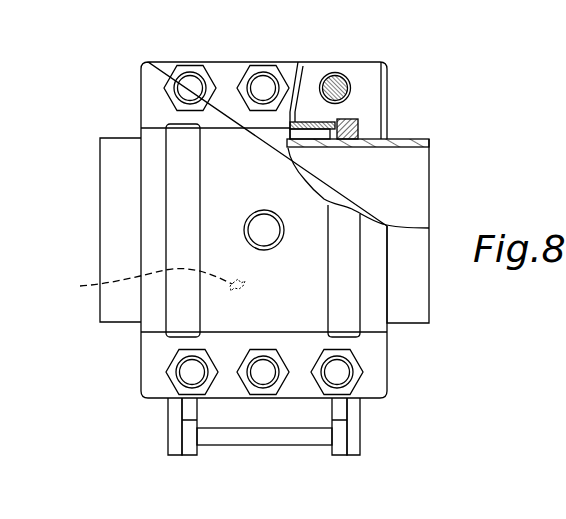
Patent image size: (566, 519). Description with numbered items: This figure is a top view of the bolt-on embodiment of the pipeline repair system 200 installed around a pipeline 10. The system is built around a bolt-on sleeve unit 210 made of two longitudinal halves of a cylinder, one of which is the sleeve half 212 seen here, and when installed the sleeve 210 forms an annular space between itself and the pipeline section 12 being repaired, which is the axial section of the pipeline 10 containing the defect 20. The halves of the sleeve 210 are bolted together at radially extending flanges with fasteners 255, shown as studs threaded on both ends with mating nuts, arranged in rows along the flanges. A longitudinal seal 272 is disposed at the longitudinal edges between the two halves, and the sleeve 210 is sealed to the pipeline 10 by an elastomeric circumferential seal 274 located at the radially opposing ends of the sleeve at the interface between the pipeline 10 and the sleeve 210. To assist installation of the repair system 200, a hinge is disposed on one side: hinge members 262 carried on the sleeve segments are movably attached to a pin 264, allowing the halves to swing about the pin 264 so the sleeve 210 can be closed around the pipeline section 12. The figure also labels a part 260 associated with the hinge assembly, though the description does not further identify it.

The pipeline 10 is at (133, 233).
The pipeline section 12 is at (382, 148).
The defect 20 is at (150, 284).
The pipeline repair system 200 is at (419, 104).
The bolt-on sleeve unit 210 is at (140, 92).
The sleeve half 212 is at (251, 201).
The fasteners 255 is at (190, 80).
The cross bar 260 is at (290, 429).
The hinge member 262 is at (172, 448).
The pin 264 is at (190, 448).
The longitudinal seal 272 is at (306, 122).
The elastomeric circumferential seal 274 is at (358, 126).